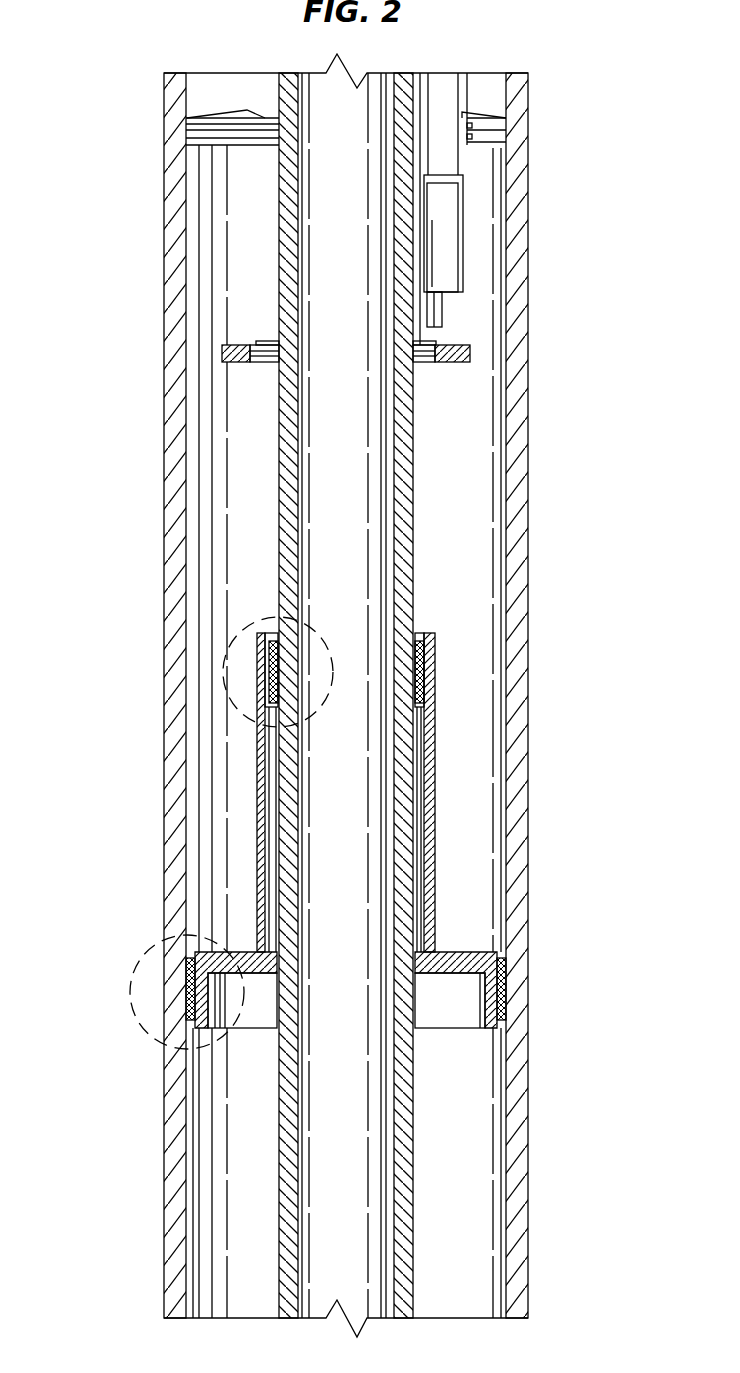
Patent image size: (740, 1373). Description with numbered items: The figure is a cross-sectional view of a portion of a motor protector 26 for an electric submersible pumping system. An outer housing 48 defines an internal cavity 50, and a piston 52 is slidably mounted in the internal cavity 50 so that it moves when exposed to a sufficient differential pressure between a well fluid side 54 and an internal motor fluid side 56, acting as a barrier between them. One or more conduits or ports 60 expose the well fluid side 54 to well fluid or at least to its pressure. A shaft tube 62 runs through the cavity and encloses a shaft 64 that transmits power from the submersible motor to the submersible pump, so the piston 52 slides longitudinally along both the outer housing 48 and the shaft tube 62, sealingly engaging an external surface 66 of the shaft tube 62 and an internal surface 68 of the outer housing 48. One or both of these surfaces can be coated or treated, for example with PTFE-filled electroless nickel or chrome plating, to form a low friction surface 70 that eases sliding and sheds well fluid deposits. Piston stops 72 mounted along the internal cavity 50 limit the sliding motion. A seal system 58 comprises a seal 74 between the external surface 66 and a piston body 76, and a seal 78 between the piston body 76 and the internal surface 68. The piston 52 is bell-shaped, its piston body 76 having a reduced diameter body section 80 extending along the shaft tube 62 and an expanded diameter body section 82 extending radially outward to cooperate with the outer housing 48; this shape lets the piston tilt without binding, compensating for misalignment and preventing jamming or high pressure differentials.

The motor protector 26 is at (557, 322).
The outer housing 48 is at (163, 423).
The internal cavity 50 is at (472, 630).
The piston 52 is at (437, 808).
The well fluid side 54 is at (472, 890).
The internal motor fluid side 56 is at (470, 1102).
The seal system 58 is at (222, 653).
The ports 60 is at (207, 90).
The shaft tube 62 is at (415, 495).
The shaft 64 is at (372, 403).
The external surface 66 is at (278, 530).
The internal surface 68 is at (187, 1136).
The low friction surface 70 is at (277, 1192).
The piston stops 72 is at (219, 346).
The seal 74 is at (427, 681).
The piston body 76 is at (260, 848).
The seal 78 is at (503, 992).
The reduced diameter body section 80 is at (253, 770).
The expanded diameter body section 82 is at (500, 1026).